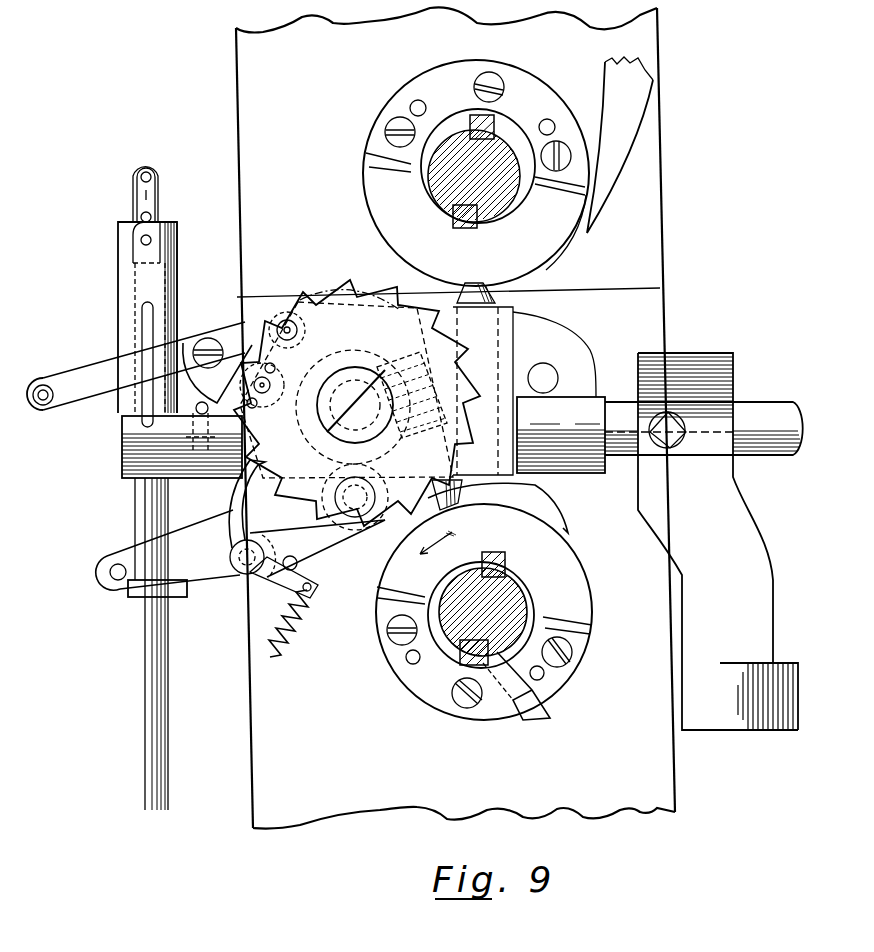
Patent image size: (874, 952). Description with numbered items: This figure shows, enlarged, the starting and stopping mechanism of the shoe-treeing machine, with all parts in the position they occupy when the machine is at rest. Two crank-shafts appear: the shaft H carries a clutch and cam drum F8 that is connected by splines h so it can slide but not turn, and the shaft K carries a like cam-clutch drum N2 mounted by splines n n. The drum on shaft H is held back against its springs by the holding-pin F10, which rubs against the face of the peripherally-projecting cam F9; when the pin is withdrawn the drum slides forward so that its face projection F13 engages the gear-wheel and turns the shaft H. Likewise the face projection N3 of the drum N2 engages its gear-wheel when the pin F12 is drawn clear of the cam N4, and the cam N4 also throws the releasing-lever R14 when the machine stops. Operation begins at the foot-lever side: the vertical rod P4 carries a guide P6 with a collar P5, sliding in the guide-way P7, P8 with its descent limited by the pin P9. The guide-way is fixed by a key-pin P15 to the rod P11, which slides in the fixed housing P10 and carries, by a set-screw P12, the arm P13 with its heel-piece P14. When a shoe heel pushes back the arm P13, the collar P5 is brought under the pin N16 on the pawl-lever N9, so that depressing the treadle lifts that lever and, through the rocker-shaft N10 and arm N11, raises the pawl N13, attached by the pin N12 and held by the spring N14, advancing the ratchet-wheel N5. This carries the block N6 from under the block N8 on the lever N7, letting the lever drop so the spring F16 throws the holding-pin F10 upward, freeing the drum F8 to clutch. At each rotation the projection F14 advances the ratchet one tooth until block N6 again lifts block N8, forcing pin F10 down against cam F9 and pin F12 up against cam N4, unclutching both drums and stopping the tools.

The cam-clutch drum N2 is at (476, 173).
The face projection N3 is at (478, 121).
The crank-shaft K is at (505, 205).
The splines n is at (486, 408).
The cam N4 is at (558, 265).
The releasing-lever R14 is at (632, 140).
The pin F12 is at (497, 292).
The ratchet-wheel N5 is at (357, 403).
The block N6 is at (272, 373).
The spring F16 is at (445, 358).
The rocker-shaft N10 is at (355, 497).
The rod P11 is at (618, 406).
The fixed housing P10 is at (561, 434).
The arm P13 is at (704, 541).
The set-screw P12 is at (686, 430).
The heel-piece P14 is at (773, 660).
The vertical rod P4 is at (165, 688).
The pin P9 is at (142, 219).
The guide-way P8 is at (120, 302).
The lever N7 is at (136, 366).
The block N8 is at (217, 370).
The key-pin P15 is at (197, 419).
The guide-way P7 is at (122, 437).
The guide P6 is at (136, 507).
The collar P5 is at (167, 601).
The pawl-lever N9 is at (168, 550).
The pin N16 is at (108, 582).
The pawl N13 is at (233, 500).
The pin N12 is at (246, 567).
The arm N11 is at (317, 548).
The spring N14 is at (303, 623).
The clutch and cam drum F8 is at (484, 612).
The crank-shaft H is at (527, 601).
The face projection F13 is at (479, 661).
The projection F14 is at (540, 722).
The peripherally-projecting cam F9 is at (498, 508).
The holding-pin F10 is at (462, 492).